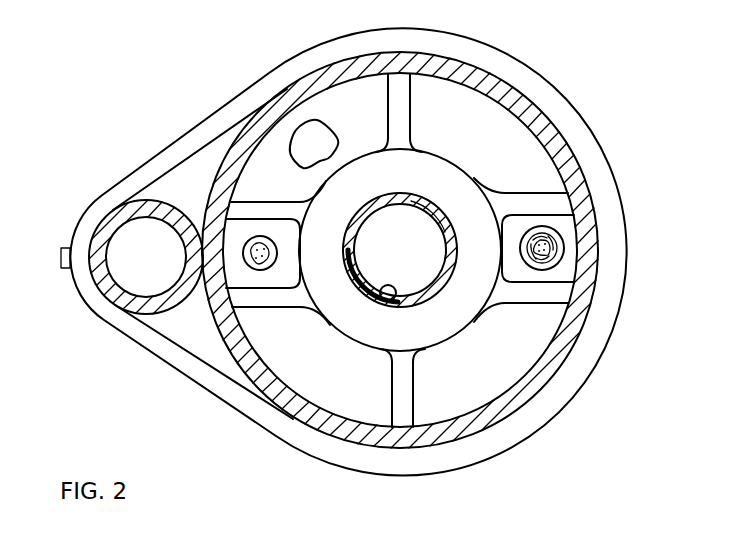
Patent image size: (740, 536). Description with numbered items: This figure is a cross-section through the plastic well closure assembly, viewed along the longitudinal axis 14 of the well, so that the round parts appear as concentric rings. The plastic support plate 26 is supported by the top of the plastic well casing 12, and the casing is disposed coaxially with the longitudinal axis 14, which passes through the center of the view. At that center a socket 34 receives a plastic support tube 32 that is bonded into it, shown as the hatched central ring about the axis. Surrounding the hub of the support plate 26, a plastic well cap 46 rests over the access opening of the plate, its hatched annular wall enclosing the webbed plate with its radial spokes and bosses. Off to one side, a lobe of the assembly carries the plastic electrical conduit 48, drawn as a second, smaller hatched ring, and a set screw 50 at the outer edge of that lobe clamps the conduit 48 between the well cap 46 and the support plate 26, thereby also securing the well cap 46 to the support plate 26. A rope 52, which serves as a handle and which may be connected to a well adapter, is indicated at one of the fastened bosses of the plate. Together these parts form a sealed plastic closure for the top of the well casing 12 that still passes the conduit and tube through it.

The plastic well casing 12 is at (590, 322).
The longitudinal axis 14 is at (401, 248).
The plastic support plate 26 is at (467, 128).
The plastic support tube 32 is at (384, 218).
The socket 34 is at (397, 300).
The plastic well cap 46 is at (563, 93).
The plastic electrical conduit 48 is at (158, 202).
The set screw 50 is at (62, 256).
The rope 52 is at (277, 263).